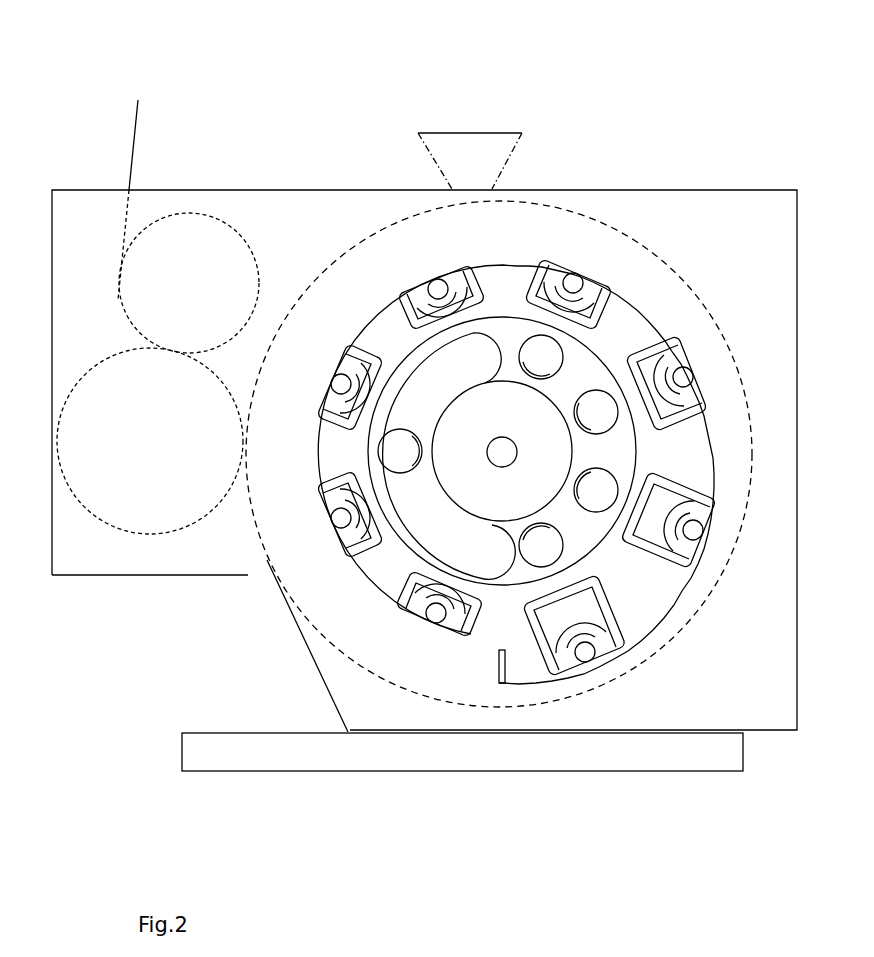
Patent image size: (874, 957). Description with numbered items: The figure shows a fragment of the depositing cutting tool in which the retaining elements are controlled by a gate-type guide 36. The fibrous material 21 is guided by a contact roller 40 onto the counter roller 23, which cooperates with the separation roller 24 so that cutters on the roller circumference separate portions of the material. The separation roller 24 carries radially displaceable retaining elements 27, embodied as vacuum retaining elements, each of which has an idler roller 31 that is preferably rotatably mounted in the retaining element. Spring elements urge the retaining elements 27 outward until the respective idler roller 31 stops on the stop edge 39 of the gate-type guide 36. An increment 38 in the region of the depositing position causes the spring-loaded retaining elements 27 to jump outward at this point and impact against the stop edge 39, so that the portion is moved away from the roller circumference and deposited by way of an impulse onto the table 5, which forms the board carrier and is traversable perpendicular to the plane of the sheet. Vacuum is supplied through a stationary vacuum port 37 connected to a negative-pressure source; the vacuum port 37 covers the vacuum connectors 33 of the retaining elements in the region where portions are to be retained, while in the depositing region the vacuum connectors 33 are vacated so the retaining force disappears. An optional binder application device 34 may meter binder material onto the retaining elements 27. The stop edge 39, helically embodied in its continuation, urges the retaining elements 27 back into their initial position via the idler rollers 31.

The table 5 is at (743, 752).
The fibrous material 21 is at (133, 153).
The counter roller 23 is at (80, 377).
The separation roller 24 is at (347, 257).
The retaining element 27 is at (600, 290).
The idler roller 31 is at (687, 368).
The vacuum connector 33 is at (553, 528).
The binder application device 34 is at (483, 132).
The gate-type guide 36 is at (697, 197).
The vacuum port 37 is at (377, 433).
The increment 38 is at (497, 668).
The stop edge 39 is at (263, 558).
The contact roller 40 is at (207, 230).